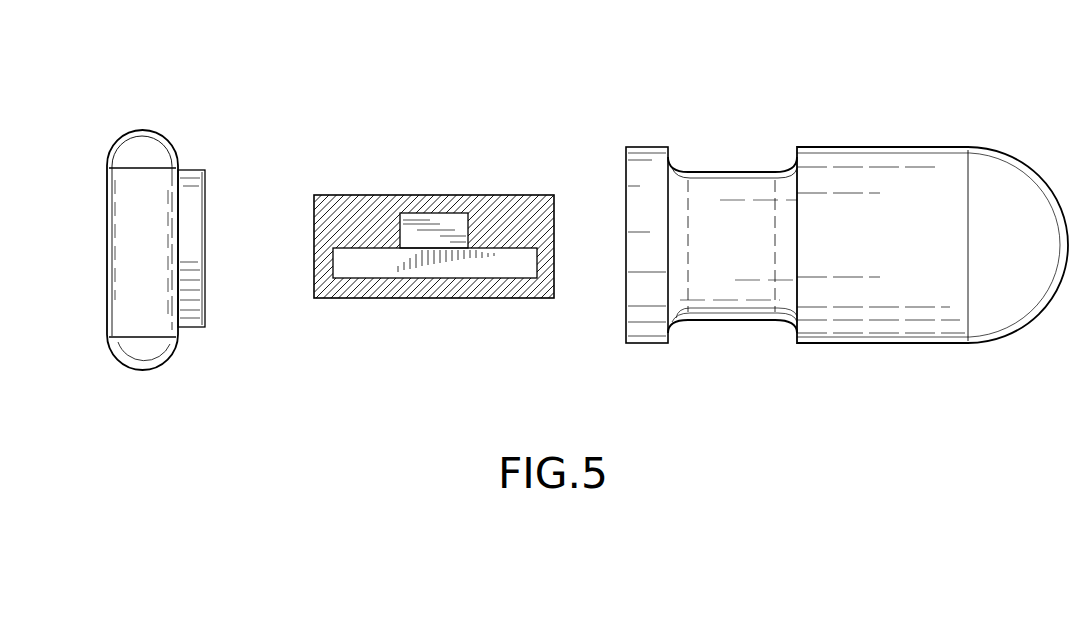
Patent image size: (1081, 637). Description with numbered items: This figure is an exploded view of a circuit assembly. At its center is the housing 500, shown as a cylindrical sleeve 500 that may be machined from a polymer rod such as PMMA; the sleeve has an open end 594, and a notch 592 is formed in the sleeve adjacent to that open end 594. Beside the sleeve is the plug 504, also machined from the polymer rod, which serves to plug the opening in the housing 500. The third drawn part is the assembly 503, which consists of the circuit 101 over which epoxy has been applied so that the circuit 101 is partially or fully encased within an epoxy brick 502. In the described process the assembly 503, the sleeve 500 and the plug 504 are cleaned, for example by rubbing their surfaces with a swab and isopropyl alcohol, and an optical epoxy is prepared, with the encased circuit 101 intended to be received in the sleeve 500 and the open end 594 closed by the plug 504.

The housing 500 is at (800, 235).
The notch 592 is at (743, 320).
The open end 594 is at (627, 158).
The epoxy brick 502 is at (368, 195).
The assembly 503 is at (434, 200).
The circuit 101 is at (387, 267).
The plug 504 is at (157, 130).